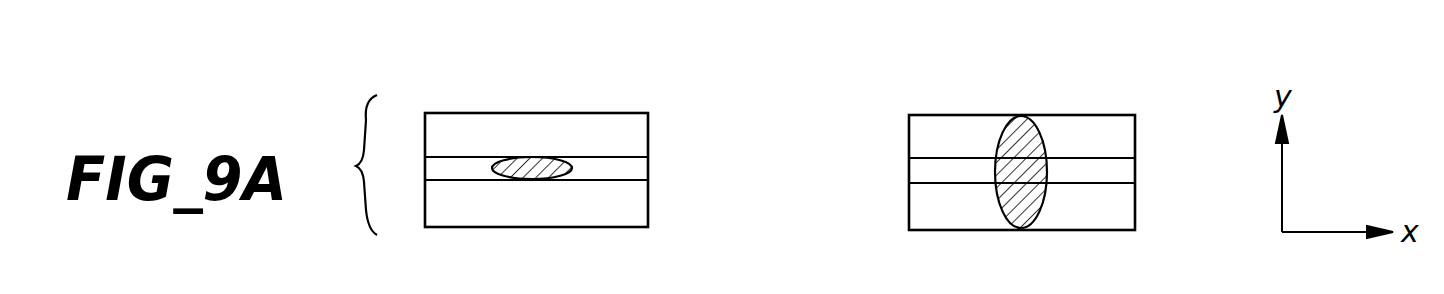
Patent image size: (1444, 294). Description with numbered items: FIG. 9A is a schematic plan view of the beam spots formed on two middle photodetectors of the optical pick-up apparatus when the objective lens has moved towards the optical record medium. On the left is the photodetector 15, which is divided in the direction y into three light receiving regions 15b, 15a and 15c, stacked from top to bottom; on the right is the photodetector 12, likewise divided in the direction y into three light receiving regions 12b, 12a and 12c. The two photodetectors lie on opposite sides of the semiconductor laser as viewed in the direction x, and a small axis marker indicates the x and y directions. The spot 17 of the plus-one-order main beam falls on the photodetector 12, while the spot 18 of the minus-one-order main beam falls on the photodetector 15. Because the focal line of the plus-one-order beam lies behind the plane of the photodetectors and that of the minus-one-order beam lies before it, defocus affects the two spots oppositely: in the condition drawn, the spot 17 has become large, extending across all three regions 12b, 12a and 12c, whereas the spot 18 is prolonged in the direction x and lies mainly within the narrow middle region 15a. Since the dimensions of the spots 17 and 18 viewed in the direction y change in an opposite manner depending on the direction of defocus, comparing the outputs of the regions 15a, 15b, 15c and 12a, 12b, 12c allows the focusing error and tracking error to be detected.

The photodetector 15 is at (487, 110).
The light receiving region 15a is at (638, 168).
The light receiving region 15b is at (638, 135).
The light receiving region 15c is at (638, 203).
The spot of the −1-order main beam 18 is at (570, 172).
The photodetector 12 is at (1077, 110).
The light receiving region 12a is at (1127, 170).
The light receiving region 12b is at (1127, 135).
The light receiving region 12c is at (1127, 207).
The spot of the 1-order main beam 17 is at (1000, 137).